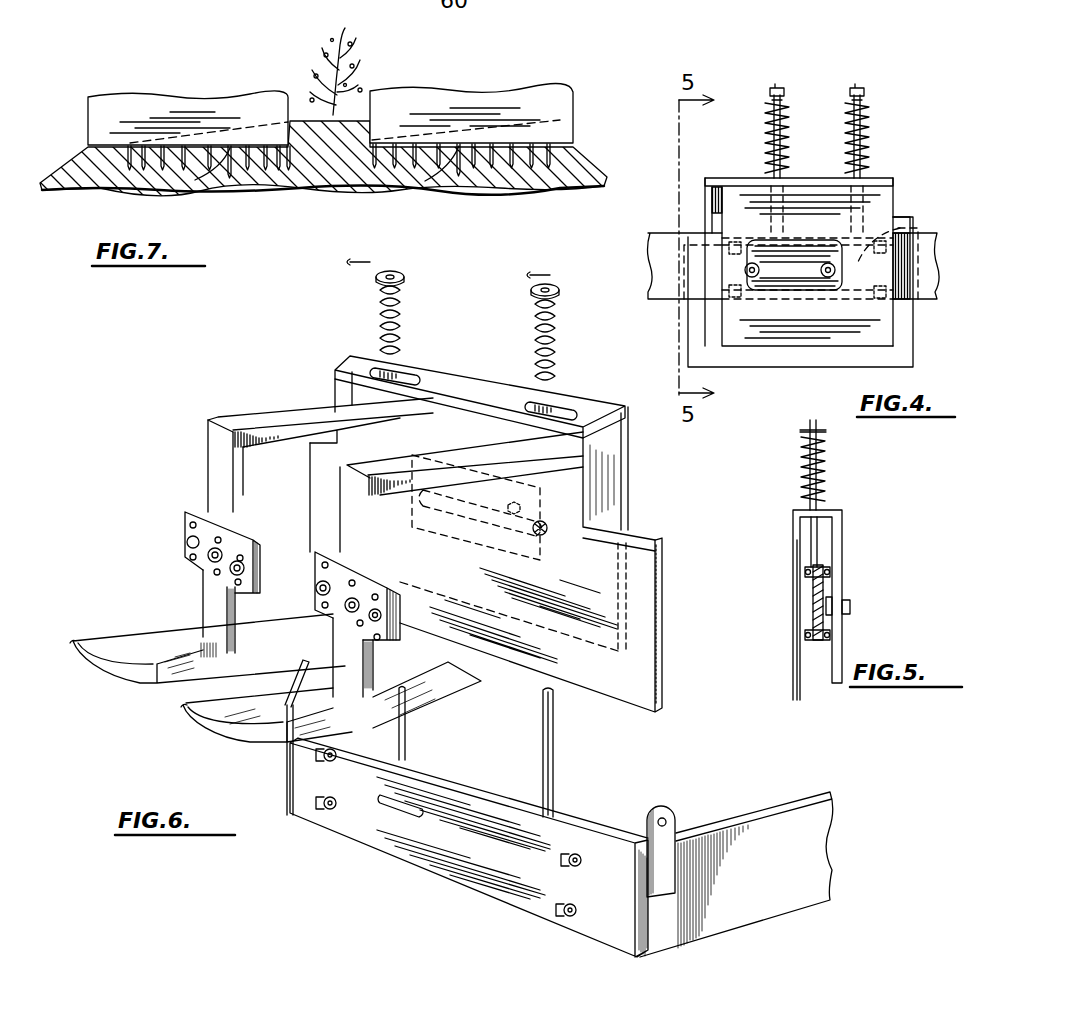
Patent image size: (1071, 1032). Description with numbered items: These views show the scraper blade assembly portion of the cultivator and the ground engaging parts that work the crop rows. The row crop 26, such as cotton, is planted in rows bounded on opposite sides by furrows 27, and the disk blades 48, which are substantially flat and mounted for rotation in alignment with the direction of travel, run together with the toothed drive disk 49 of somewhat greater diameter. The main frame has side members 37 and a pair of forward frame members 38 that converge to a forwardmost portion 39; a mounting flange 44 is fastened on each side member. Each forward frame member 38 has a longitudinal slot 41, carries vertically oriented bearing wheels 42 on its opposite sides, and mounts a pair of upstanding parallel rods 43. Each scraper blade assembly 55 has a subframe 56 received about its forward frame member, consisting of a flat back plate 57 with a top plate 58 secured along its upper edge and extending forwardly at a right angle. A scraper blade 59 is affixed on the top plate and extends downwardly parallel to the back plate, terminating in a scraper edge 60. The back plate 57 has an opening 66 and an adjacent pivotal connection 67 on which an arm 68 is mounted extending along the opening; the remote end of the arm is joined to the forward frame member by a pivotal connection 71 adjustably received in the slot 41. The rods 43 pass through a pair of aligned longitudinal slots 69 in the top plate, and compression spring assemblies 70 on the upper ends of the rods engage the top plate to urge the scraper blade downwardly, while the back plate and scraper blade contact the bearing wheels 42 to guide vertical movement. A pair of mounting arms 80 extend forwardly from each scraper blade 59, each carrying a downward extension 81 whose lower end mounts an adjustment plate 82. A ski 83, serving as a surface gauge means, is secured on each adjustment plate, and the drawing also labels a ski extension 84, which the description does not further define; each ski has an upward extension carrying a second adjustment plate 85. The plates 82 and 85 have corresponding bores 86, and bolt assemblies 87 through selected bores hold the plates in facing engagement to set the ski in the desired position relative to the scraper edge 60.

In FIG. 7, the row crop 26 is at (348, 56).
In FIG. 7, the furrows 27 is at (70, 172).
In FIG. 6, the side members 37 is at (790, 837).
In FIG. 4, the forward frame members 38 is at (663, 250).
In FIG. 5, the forward frame members 38 is at (814, 617).
In FIG. 6, the forward frame members 38 is at (293, 677).
In FIG. 6, the forwardmost portion 39 is at (287, 762).
In FIG. 4, the longitudinal slot 41 is at (803, 239).
In FIG. 6, the longitudinal slot 41 is at (405, 805).
In FIG. 4, the bearing wheels 42 is at (731, 290).
In FIG. 5, the bearing wheels 42 is at (806, 568).
In FIG. 6, the bearing wheels 42 is at (317, 800).
In FIG. 4, the rods 43 is at (843, 130).
In FIG. 5, the rods 43 is at (820, 530).
In FIG. 6, the rods 43 is at (545, 735).
In FIG. 6, the mounting flange 44 is at (667, 855).
In FIG. 7, the disk blades 48 is at (162, 170).
In FIG. 7, the toothed drive disk 49 is at (226, 180).
In FIG. 4, the scraper blade assemblies 55 is at (901, 175).
In FIG. 6, the scraper blade assemblies 55 is at (486, 405).
In FIG. 4, the subframe 56 is at (736, 169).
In FIG. 6, the subframe 56 is at (578, 385).
In FIG. 4, the back plate 57 is at (836, 207).
In FIG. 5, the back plate 57 is at (842, 560).
In FIG. 6, the back plate 57 is at (628, 455).
In FIG. 6, the top plate 58 is at (480, 385).
In FIG. 7, the scraper blade 59 is at (222, 105).
In FIG. 4, the scraper blade 59 is at (900, 338).
In FIG. 5, the scraper blade 59 is at (796, 675).
In FIG. 6, the scraper blade 59 is at (640, 668).
In FIG. 7, the scraper edge 60 is at (88, 143).
In FIG. 4, the scraper edge 60 is at (742, 367).
In FIG. 5, the scraper edge 60 is at (796, 703).
In FIG. 6, the scraper edge 60 is at (578, 690).
In FIG. 4, the opening 66 is at (778, 293).
In FIG. 6, the opening 66 is at (425, 527).
In FIG. 4, the pivotal connection 67 is at (748, 278).
In FIG. 5, the pivotal connection 67 is at (848, 604).
In FIG. 6, the pivotal connection 67 is at (547, 532).
In FIG. 4, the arm 68 is at (800, 272).
In FIG. 5, the arm 68 is at (832, 598).
In FIG. 6, the arm 68 is at (522, 506).
In FIG. 6, the longitudinal slots 69 is at (405, 372).
In FIG. 4, the compression spring assemblies 70 is at (843, 108).
In FIG. 5, the compression spring assemblies 70 is at (822, 474).
In FIG. 6, the compression spring assemblies 70 is at (351, 354).
In FIG. 4, the pivotal connection 71 is at (833, 277).
In FIG. 6, the mounting arms 80 is at (383, 463).
In FIG. 6, the extension 81 is at (357, 498).
In FIG. 6, the adjustment plate 82 is at (337, 540).
In FIG. 6, the ski 83 is at (157, 683).
In FIG. 6, the skid 84 is at (347, 670).
In FIG. 6, the adjustment plate 85 is at (321, 583).
In FIG. 6, the bores 86 is at (413, 593).
In FIG. 6, the bolt assemblies 87 is at (345, 605).